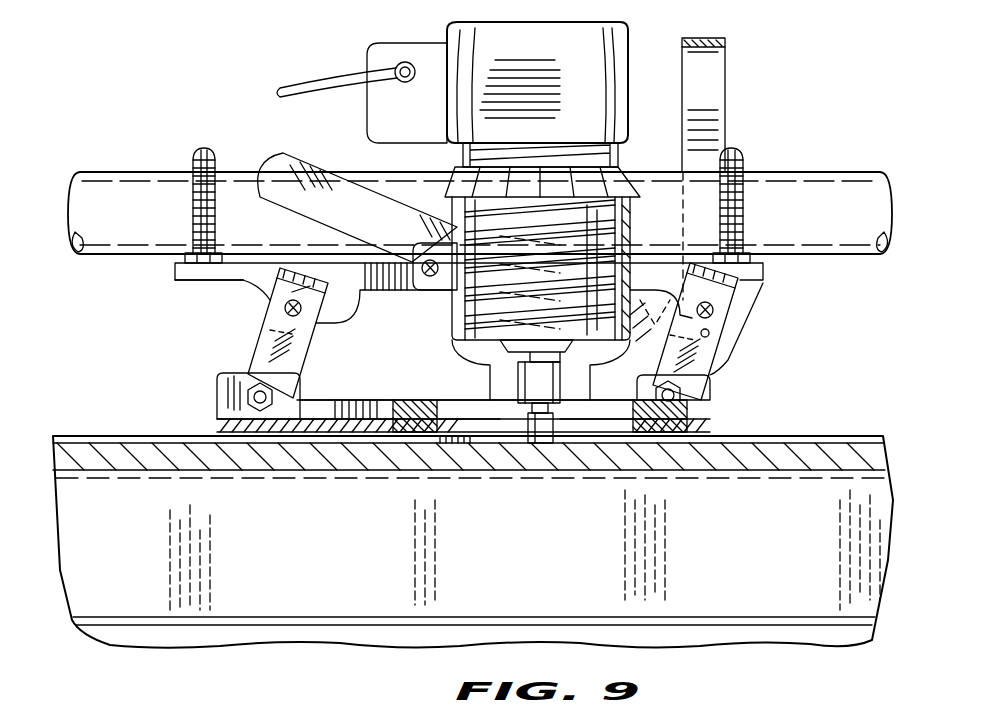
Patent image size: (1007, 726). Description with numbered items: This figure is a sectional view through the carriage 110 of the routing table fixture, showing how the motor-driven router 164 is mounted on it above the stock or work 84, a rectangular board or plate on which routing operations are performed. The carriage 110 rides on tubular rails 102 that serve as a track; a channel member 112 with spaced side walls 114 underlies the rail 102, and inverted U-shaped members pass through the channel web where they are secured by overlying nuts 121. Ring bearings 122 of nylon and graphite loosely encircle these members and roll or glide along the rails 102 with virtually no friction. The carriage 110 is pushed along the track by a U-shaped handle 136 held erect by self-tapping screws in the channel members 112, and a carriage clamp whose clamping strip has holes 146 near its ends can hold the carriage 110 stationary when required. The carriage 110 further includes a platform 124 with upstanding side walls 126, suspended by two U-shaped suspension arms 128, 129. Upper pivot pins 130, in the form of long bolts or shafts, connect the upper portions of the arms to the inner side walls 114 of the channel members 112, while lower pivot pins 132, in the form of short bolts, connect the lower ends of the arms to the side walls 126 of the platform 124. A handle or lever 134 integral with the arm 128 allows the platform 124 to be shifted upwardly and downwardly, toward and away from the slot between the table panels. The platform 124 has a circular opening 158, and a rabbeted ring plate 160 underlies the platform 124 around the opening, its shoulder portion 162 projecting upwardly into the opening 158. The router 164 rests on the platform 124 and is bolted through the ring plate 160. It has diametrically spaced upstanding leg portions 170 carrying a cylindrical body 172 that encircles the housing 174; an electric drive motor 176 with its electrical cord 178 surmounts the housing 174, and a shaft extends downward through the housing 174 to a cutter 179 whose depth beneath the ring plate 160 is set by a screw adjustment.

The stock or work 84 is at (810, 437).
The tubular rails 102 is at (110, 180).
The carriage 110 is at (176, 318).
The channel members 112 is at (334, 330).
The side walls 114 is at (350, 277).
The overlying nuts 121 is at (190, 250).
The ring bearings 122 is at (193, 173).
The platform 124 is at (318, 417).
The upstanding side walls 126 is at (372, 405).
The U-shaped suspension arm 128 is at (720, 366).
The U-shaped suspension arm 129 is at (262, 343).
The upper pivot pins 130 is at (284, 309).
The lower pivot pins 132 is at (246, 393).
The handle or lever 134 is at (282, 170).
The U-shaped handle 136 is at (727, 44).
The holes 146 is at (850, 590).
The circular opening 158 is at (458, 410).
The rabbeted ring plate 160 is at (455, 440).
The shoulder portion 162 is at (618, 418).
The motor-driven router 164 is at (632, 46).
The leg portions 170 is at (475, 365).
The cylindrical body 172 is at (627, 232).
The housing 174 is at (500, 292).
The electric drive motor 176 is at (493, 45).
The electrical cord 178 is at (330, 76).
The cutter 179 is at (556, 432).